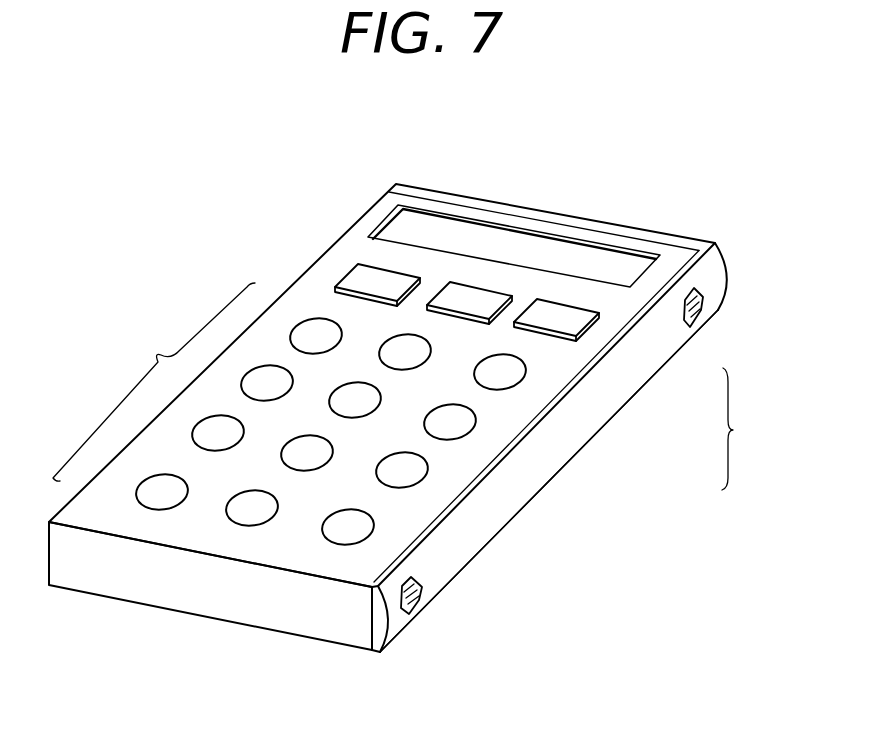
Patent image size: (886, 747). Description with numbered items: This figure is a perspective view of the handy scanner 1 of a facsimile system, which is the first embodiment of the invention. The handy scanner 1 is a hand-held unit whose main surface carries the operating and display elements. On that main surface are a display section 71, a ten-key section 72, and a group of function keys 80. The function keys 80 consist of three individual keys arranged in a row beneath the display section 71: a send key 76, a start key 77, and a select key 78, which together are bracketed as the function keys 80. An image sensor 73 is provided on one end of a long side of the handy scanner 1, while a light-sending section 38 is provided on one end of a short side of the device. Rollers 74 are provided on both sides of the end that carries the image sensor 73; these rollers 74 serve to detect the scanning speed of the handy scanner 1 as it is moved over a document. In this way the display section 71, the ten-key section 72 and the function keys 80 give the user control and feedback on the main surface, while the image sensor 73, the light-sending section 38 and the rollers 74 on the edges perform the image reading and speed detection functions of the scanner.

The handy scanner 1 is at (222, 629).
The light-sending section 38 is at (668, 237).
The display section 71 is at (406, 231).
The ten-key section 72 is at (154, 382).
The image sensor 73 is at (503, 512).
The rollers 74 is at (423, 600).
The send key 76 is at (580, 317).
The start key 77 is at (488, 297).
The select key 78 is at (398, 287).
The function keys 80 is at (748, 429).